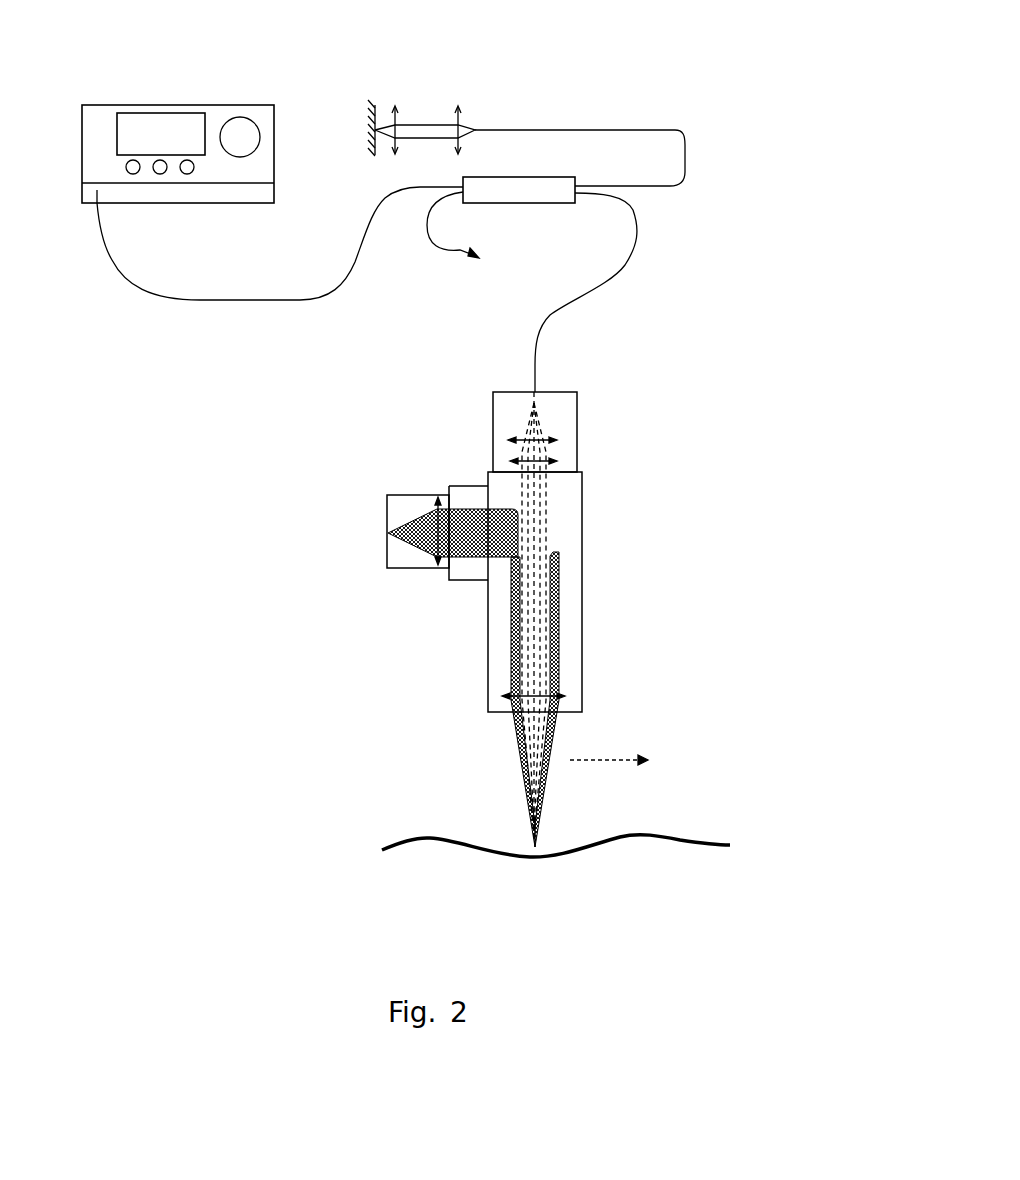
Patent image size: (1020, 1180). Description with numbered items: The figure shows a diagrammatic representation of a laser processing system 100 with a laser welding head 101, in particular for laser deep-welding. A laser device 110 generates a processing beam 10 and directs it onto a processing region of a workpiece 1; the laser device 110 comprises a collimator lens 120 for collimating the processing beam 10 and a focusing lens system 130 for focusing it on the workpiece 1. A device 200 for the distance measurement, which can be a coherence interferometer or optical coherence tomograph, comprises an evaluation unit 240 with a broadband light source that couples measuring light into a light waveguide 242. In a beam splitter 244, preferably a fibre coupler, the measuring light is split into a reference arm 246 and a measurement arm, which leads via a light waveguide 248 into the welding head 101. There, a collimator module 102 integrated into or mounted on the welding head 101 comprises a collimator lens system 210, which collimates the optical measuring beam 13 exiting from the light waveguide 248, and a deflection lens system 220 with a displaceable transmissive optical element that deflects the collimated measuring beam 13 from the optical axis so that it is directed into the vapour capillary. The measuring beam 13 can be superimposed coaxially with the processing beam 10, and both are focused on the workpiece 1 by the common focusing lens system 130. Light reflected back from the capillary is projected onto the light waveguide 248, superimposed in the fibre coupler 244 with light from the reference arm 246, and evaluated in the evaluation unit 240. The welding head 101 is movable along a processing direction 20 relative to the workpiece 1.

The laser processing system 100 is at (745, 31).
The evaluation unit 240 is at (176, 105).
The light waveguide 242 is at (213, 300).
The beam splitter 244 is at (552, 203).
The reference arm 246 is at (563, 128).
The light waveguide 248 is at (607, 283).
The device for the distance measurement 200 is at (686, 257).
The collimator module 102 is at (475, 399).
The laser welding head 101 is at (582, 590).
The optical measuring beam 13 is at (537, 523).
The collimator lens system 210 is at (557, 440).
The deflection lens system 220 is at (557, 461).
The collimator lens 120 is at (435, 503).
The laser device 110 is at (360, 557).
The processing beam 10 is at (517, 650).
The focusing lens system 130 is at (565, 696).
The processing direction 20 is at (610, 760).
The workpiece 1 is at (673, 838).